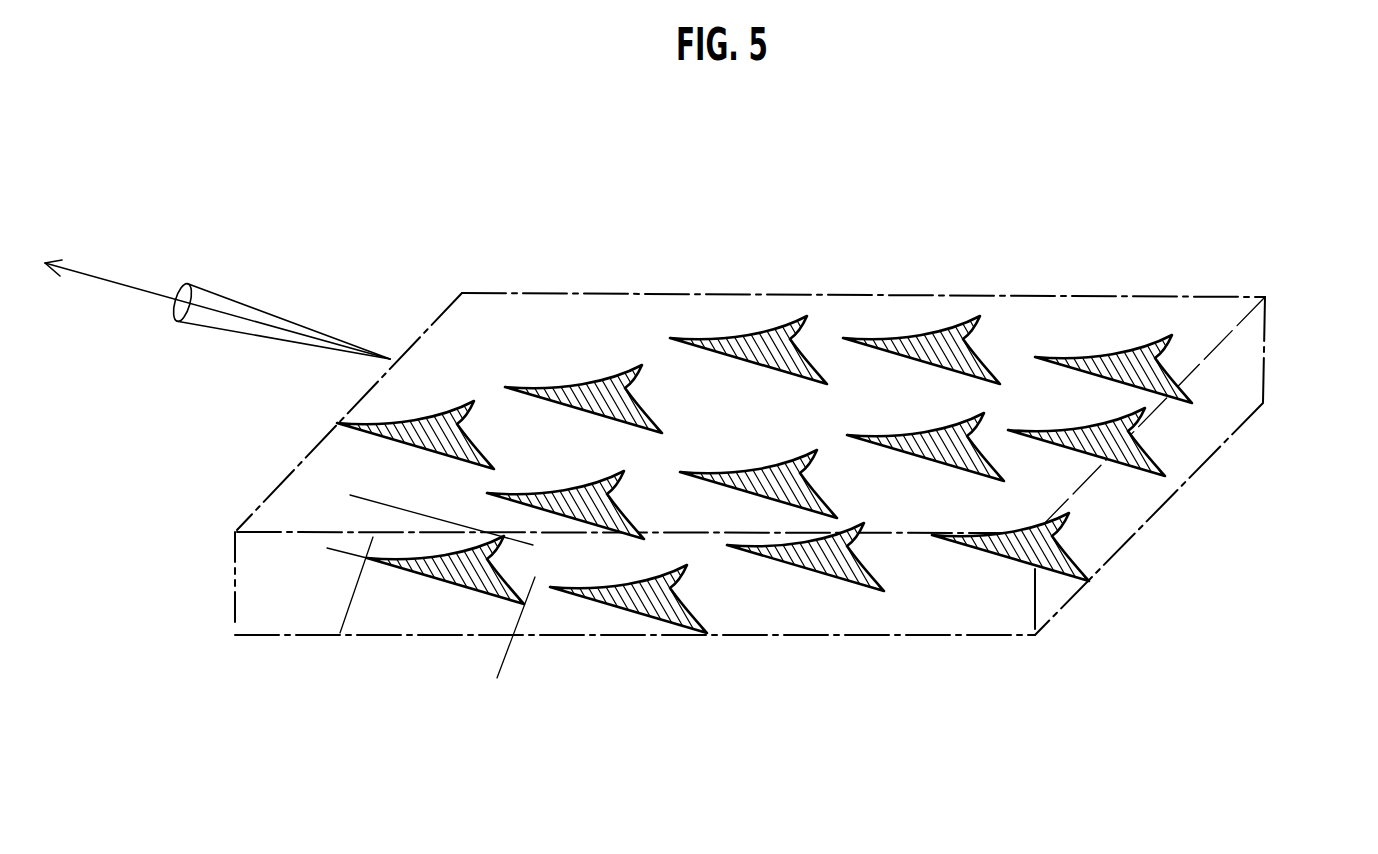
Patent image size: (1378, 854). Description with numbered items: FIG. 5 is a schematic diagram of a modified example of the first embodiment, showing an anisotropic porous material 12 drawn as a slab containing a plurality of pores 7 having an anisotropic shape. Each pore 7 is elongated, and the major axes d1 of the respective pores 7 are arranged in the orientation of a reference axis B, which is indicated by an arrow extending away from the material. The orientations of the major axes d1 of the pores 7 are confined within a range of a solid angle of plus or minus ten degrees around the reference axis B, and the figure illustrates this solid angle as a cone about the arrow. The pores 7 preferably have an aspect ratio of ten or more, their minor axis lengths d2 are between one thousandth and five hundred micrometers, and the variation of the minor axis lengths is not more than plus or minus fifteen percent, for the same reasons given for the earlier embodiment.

The pores 7 is at (607, 383).
The anisotropic porous material 12 is at (1266, 347).
The reference axis B is at (128, 287).
The major axis d1 is at (352, 608).
The minor axis length d2 is at (364, 509).